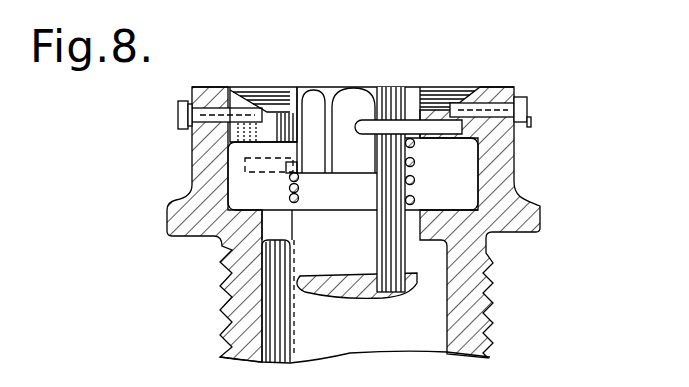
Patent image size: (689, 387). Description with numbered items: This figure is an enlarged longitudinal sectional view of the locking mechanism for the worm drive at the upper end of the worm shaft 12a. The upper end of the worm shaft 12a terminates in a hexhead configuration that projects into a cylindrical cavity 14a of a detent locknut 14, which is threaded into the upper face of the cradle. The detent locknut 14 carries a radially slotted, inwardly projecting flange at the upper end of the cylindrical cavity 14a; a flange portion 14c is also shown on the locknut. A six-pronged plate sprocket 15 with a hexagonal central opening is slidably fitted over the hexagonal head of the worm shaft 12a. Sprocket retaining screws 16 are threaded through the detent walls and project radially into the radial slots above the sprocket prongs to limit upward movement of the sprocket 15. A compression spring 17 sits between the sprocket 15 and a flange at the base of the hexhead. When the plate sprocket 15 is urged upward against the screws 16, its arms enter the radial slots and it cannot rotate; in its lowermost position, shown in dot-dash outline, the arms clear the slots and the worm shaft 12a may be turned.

The detent locknut 14 is at (168, 224).
The cylindrical cavity 14a is at (228, 196).
The cover bracket 14c is at (227, 87).
The plate sprocket 15 is at (418, 128).
The sprocket retaining screws 16 is at (530, 110).
The compression spring 17 is at (415, 161).
The worm shaft 12a is at (333, 291).